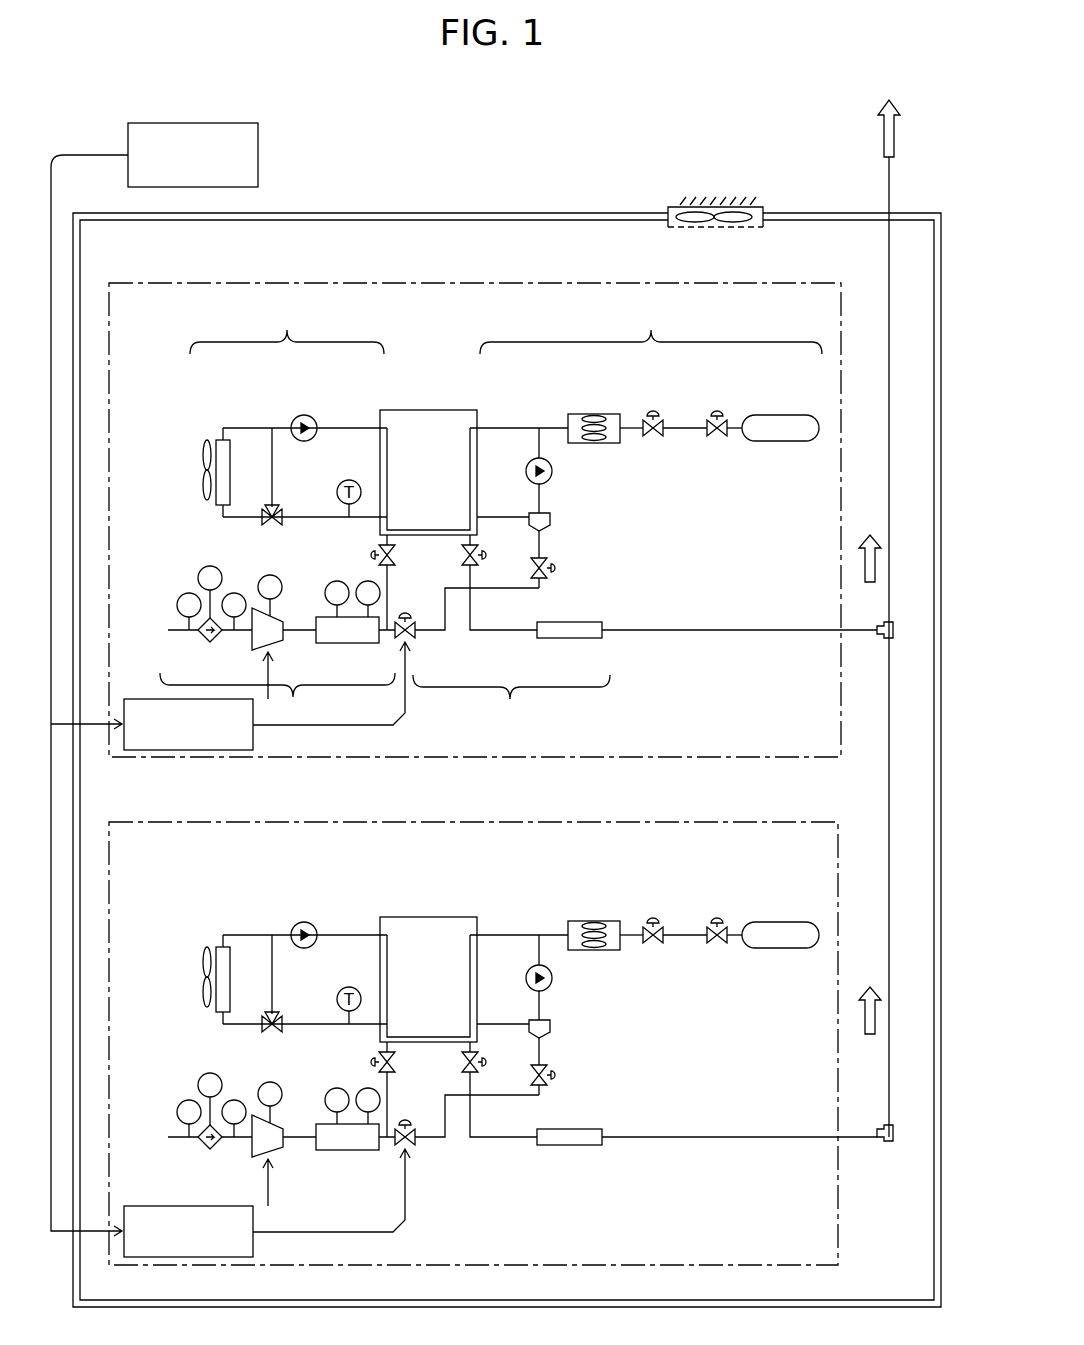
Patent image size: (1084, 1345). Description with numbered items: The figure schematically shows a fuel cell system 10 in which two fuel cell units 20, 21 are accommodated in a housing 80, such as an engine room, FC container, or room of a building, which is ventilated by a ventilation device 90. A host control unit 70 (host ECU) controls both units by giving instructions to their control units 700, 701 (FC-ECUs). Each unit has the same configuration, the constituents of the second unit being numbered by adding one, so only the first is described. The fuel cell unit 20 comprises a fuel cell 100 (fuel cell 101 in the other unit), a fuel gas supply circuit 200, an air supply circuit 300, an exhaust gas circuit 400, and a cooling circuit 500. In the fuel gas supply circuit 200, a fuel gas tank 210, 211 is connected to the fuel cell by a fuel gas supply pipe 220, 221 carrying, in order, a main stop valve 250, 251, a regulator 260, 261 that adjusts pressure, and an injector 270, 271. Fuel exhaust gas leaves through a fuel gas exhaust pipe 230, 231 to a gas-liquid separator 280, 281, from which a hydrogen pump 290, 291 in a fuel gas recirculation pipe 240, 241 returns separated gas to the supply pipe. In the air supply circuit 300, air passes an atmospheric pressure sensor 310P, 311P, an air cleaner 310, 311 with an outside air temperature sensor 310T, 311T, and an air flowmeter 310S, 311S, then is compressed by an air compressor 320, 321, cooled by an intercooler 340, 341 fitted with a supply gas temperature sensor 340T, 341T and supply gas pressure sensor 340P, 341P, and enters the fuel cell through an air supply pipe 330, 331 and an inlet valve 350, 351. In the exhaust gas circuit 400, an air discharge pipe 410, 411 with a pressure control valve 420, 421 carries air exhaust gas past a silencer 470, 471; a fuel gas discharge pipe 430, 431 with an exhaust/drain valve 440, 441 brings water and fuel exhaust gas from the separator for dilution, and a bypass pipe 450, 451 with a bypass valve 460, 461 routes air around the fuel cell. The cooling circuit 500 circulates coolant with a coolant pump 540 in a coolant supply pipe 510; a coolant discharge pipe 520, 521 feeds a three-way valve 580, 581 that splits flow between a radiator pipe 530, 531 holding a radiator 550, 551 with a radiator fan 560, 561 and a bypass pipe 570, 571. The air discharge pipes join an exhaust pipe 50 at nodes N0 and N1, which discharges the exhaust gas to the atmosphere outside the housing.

The fuel cell system 10 is at (728, 136).
The fuel cell unit 20 is at (708, 283).
The fuel cell unit 21 is at (706, 822).
The exhaust pipe 50 is at (888, 188).
The host control unit 70 is at (258, 155).
The housing 80 is at (926, 213).
The ventilation device 90 is at (676, 207).
The node N0 is at (902, 630).
The node N1 is at (902, 1133).
The fuel cell 100 is at (470, 410).
The fuel cell 101 is at (453, 962).
The fuel gas supply circuit 200 is at (651, 326).
The fuel gas tank 210 is at (770, 416).
The fuel gas tank 211 is at (782, 919).
The fuel gas supply pipe 220 is at (674, 426).
The fuel gas supply pipe 221 is at (693, 912).
The fuel gas exhaust pipe 230 is at (498, 517).
The fuel gas exhaust pipe 231 is at (544, 1006).
The fuel gas recirculation pipe 240 is at (538, 448).
The fuel gas recirculation pipe 241 is at (519, 952).
The main stop valve 250 is at (733, 424).
The main stop valve 251 is at (747, 903).
The regulator 260 is at (651, 413).
The regulator 261 is at (660, 903).
The injector 270 is at (586, 414).
The injector 271 is at (577, 918).
The gas-liquid separator 280 is at (551, 518).
The gas-liquid separator 281 is at (573, 1027).
The hydrogen pump 290 is at (553, 471).
The hydrogen pump 291 is at (572, 975).
The air supply circuit 300 is at (277, 700).
The air cleaner 310 is at (204, 643).
The air cleaner 311 is at (194, 1154).
The air flowmeter 310S is at (234, 593).
The air flowmeter 311S is at (179, 1093).
The outside air temperature sensor 310T is at (198, 578).
The outside air temperature sensor 311T is at (167, 1099).
The atmospheric pressure sensor 310P is at (177, 603).
The atmospheric pressure sensor 311P is at (157, 1117).
The air compressor 320 is at (262, 652).
The air compressor 321 is at (237, 1144).
The air supply pipe 330 is at (391, 572).
The air supply pipe 331 is at (421, 1089).
The intercooler 340 is at (340, 644).
The intercooler 341 is at (337, 1159).
The supply gas temperature sensor 340T is at (366, 581).
The supply gas temperature sensor 341T is at (334, 1091).
The supply gas pressure sensor 340P is at (328, 598).
The supply gas pressure sensor 341P is at (310, 1108).
The inlet valve 350 is at (378, 552).
The inlet valve 351 is at (352, 1051).
The exhaust gas circuit 400 is at (511, 705).
The air discharge pipe 410 is at (472, 608).
The air discharge pipe 411 is at (673, 1116).
The pressure control valve 420 is at (481, 555).
The pressure control valve 421 is at (496, 1066).
The fuel gas discharge pipe 430 is at (545, 588).
The fuel gas discharge pipe 431 is at (549, 1092).
The exhaust/drain valve 440 is at (549, 566).
The exhaust/drain valve 441 is at (572, 1066).
The bypass pipe 450 is at (440, 633).
The bypass pipe 451 is at (465, 1135).
The bypass valve 460 is at (412, 642).
The bypass valve 461 is at (359, 1176).
The silencer 470 is at (600, 622).
The silencer 471 is at (595, 1126).
The cooling circuit 500 is at (287, 326).
The coolant supply pipe 510 is at (328, 426).
The coolant discharge pipe 520 is at (284, 523).
The coolant discharge pipe 521 is at (261, 1041).
The radiator pipe 530 is at (223, 517).
The radiator pipe 531 is at (260, 1019).
The coolant pump 540 is at (308, 440).
The radiator 550 is at (219, 440).
The radiator 551 is at (195, 966).
The radiator fan 560 is at (203, 458).
The radiator fan 561 is at (168, 976).
The bypass pipe 570 is at (270, 462).
The bypass pipe 571 is at (247, 952).
The three-way valve 580 is at (264, 522).
The three-way valve 581 is at (224, 1043).
The control unit 700 is at (253, 736).
The control unit 701 is at (233, 1232).